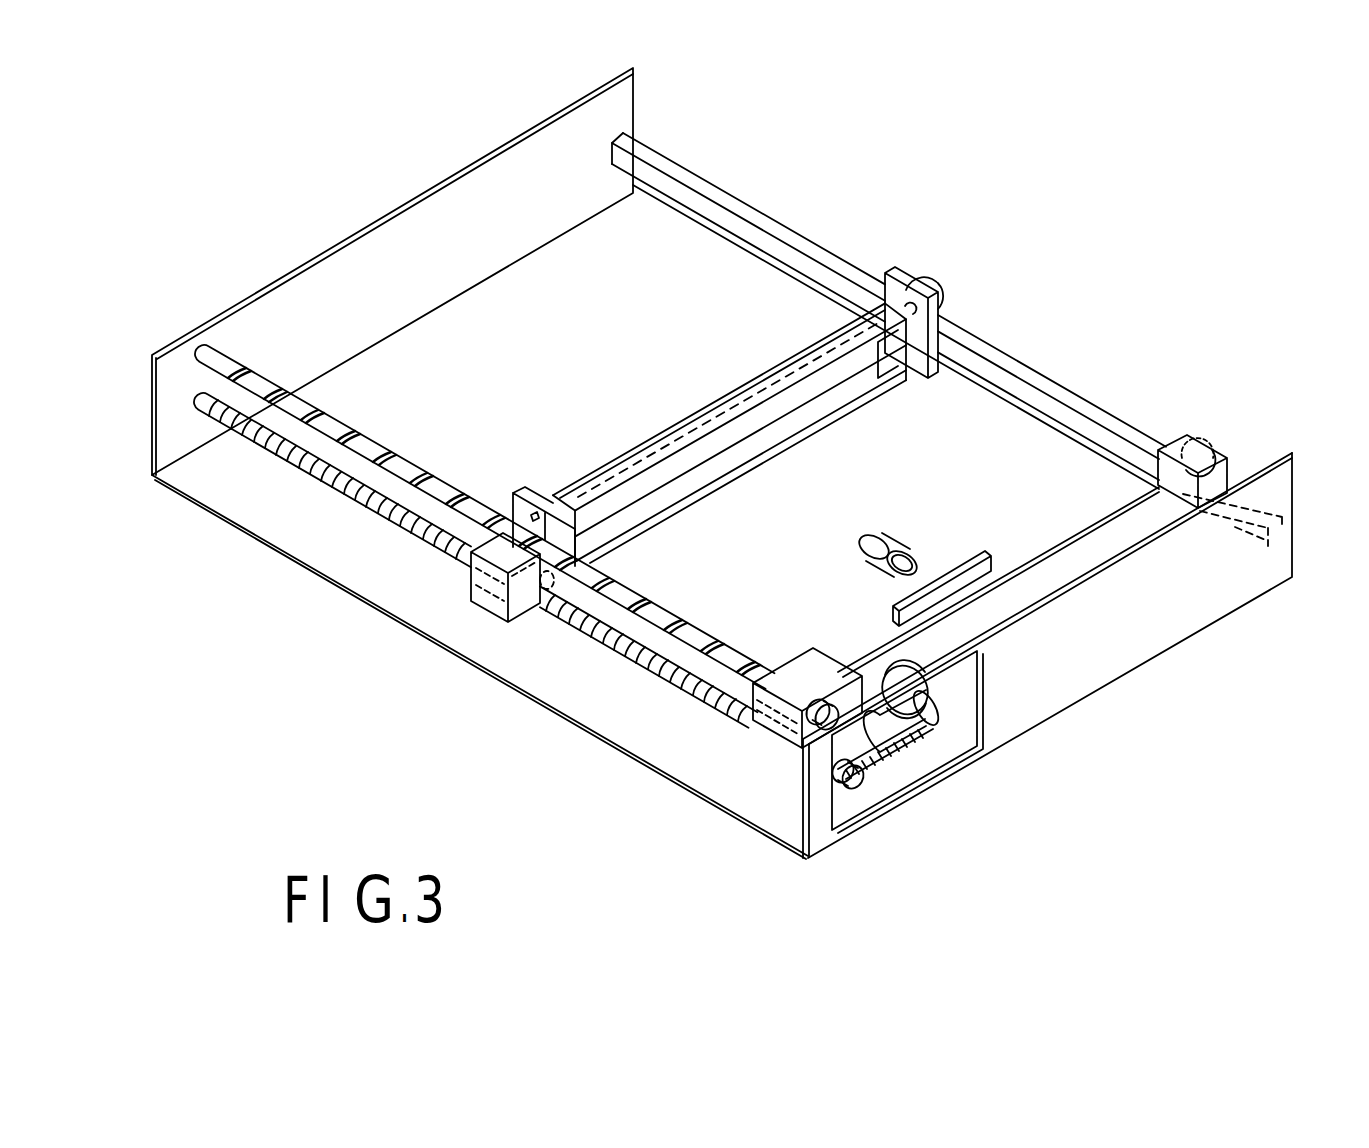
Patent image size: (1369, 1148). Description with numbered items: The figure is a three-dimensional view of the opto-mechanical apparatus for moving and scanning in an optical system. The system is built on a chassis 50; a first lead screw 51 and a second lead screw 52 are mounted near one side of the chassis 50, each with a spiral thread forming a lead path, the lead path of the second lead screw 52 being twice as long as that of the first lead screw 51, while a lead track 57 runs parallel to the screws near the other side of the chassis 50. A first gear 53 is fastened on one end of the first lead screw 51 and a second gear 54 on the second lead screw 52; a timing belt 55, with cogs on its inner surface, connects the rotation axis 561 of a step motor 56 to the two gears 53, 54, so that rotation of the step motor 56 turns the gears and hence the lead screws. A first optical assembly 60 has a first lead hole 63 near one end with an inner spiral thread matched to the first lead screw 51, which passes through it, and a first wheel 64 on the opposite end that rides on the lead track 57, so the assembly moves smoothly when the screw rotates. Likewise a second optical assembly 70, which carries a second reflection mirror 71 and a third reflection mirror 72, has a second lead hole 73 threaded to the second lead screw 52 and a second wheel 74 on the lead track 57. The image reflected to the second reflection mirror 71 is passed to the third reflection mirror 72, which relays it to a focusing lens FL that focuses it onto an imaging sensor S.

The chassis 50 is at (1190, 632).
The first lead screw 51 is at (444, 494).
The second lead screw 52 is at (600, 627).
The first gear 53 is at (817, 737).
The second gear 54 is at (848, 789).
The timing belt 55 is at (917, 733).
The step motor 56 is at (937, 693).
The rotation axis of the step motor 561 is at (930, 728).
The lead track 57 is at (1085, 400).
The first optical assembly 60 is at (1152, 515).
The first lead hole 63 is at (806, 748).
The first wheel 64 is at (1205, 438).
The second optical assembly 70 is at (757, 385).
The second reflection mirror 71 is at (683, 423).
The third reflection mirror 72 is at (548, 582).
The second lead hole 73 is at (504, 588).
The second wheel 74 is at (932, 280).
The focusing lens FL is at (896, 538).
The imaging sensor S is at (987, 546).